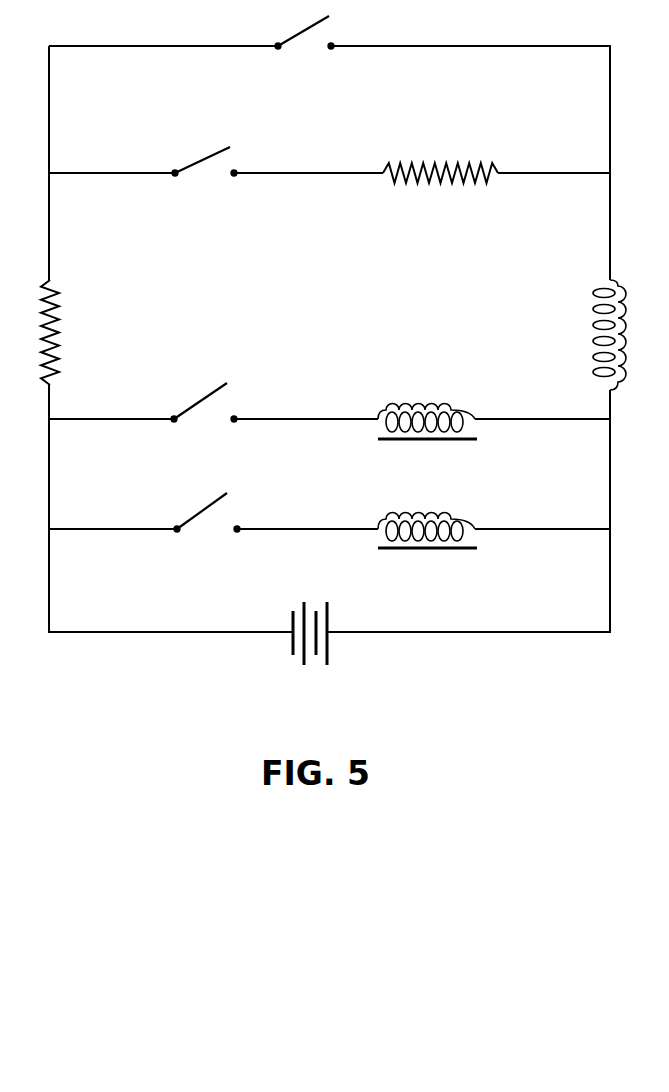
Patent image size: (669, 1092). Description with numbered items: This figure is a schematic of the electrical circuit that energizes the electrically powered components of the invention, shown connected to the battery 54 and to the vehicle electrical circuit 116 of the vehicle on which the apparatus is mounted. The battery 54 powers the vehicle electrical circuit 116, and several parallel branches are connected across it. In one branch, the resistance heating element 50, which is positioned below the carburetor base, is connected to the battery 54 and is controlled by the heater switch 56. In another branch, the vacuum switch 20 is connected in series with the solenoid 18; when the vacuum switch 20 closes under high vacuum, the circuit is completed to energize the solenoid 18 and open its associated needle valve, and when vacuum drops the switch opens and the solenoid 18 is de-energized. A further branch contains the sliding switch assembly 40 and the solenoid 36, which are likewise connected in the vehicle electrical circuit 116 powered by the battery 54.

The vehicle electrical circuit 116 is at (541, 633).
The heater switch 56 is at (203, 158).
The resistance heating element 50 is at (435, 167).
The vacuum switch 20 is at (200, 403).
The solenoid 18 is at (438, 410).
The sliding switch assembly 40 is at (205, 512).
The solenoid 36 is at (425, 517).
The battery 54 is at (329, 648).